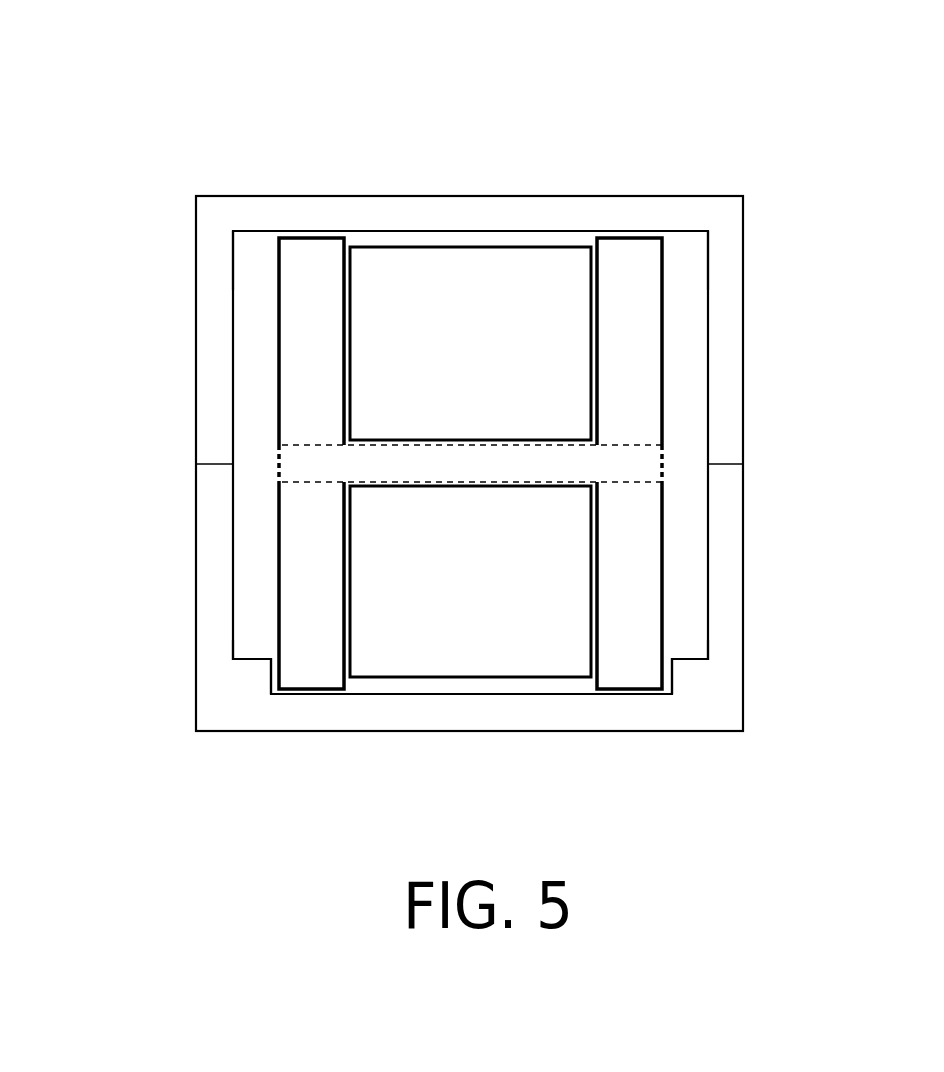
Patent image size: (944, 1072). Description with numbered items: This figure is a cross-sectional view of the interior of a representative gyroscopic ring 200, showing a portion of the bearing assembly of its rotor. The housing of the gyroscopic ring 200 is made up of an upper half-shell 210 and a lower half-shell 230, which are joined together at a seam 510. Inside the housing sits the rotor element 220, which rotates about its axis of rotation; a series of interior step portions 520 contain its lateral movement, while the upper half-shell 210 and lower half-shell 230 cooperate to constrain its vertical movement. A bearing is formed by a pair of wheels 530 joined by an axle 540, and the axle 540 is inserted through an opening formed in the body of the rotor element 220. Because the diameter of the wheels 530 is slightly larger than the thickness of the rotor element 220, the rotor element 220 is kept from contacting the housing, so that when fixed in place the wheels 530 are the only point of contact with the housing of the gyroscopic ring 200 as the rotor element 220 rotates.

The gyroscopic ring 200 is at (207, 79).
The upper half-shell 210 is at (470, 195).
The rotor element 220 is at (498, 358).
The lower half-shell 230 is at (472, 732).
The seam 510 is at (196, 462).
The interior step portions 520 is at (270, 267).
The wheels 530 is at (312, 236).
The axle 540 is at (300, 443).